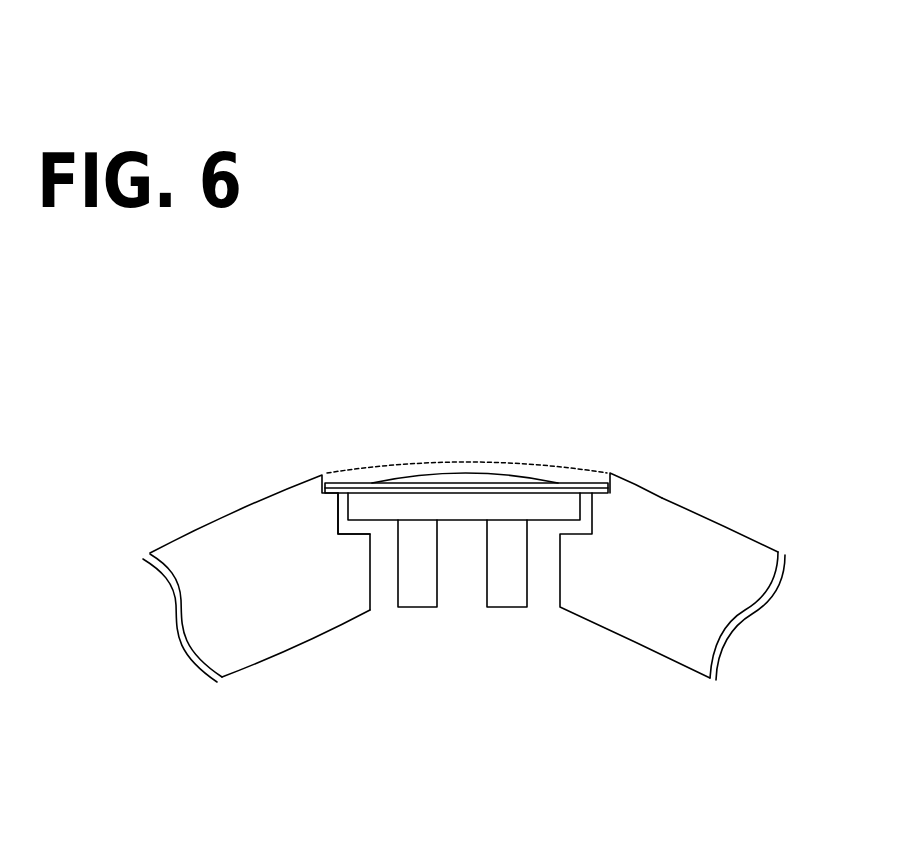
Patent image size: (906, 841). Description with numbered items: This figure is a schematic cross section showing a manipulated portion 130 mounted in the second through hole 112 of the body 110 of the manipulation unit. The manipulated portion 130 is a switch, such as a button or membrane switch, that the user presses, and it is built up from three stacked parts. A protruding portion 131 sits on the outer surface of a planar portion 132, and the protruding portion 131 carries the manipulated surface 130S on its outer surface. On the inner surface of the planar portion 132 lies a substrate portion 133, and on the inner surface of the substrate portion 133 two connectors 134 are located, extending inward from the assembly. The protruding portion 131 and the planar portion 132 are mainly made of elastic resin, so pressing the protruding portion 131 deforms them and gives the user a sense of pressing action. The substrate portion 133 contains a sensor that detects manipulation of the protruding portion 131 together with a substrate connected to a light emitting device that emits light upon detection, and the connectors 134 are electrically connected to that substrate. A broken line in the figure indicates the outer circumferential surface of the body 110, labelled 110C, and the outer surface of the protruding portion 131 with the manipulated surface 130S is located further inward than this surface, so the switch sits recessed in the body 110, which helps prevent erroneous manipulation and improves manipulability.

The body 110 is at (233, 540).
The curved surface of base 110C is at (638, 482).
The second through hole 112 is at (535, 583).
The manipulated portion 130 is at (525, 469).
The manipulated surface 130S is at (475, 473).
The protruding portion 131 is at (433, 484).
The planar portion 132 is at (345, 487).
The substrate portion 133 is at (383, 507).
The connectors 134 is at (507, 587).